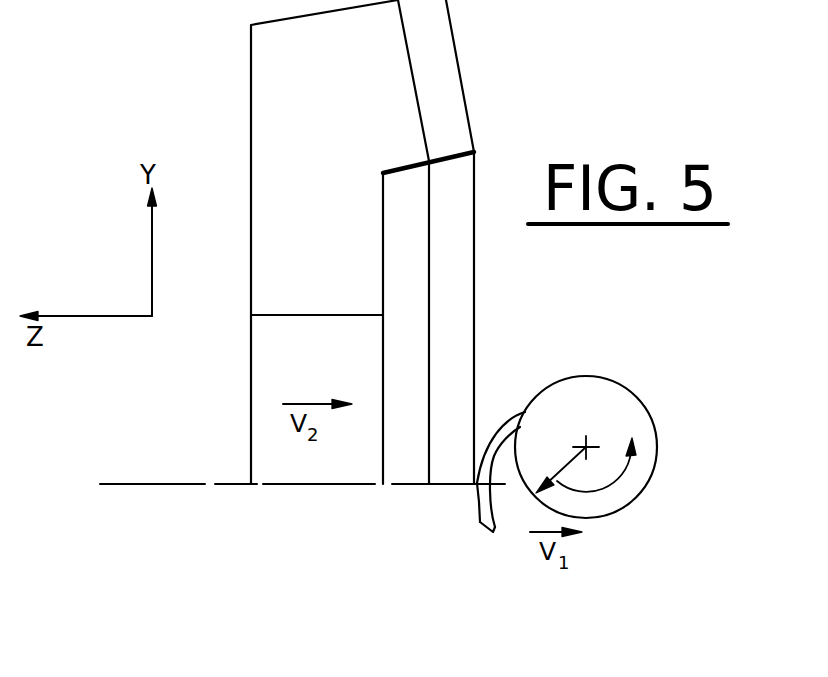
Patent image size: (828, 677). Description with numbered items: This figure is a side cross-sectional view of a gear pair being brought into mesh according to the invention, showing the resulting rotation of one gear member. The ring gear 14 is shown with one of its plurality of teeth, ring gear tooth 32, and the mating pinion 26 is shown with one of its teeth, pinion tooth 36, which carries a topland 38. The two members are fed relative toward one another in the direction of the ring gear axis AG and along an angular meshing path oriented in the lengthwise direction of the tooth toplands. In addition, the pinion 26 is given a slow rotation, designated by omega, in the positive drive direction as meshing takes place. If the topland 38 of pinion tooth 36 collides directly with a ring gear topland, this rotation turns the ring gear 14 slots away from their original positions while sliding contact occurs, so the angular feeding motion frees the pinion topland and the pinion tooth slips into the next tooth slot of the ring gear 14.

The ring gear 14 is at (270, 123).
The ring gear tooth 32 is at (445, 78).
The pinion 26 is at (630, 413).
The pinion tooth 36 is at (476, 502).
The pinion tooth topland 38 is at (486, 497).
The ring gear axis AG is at (148, 487).